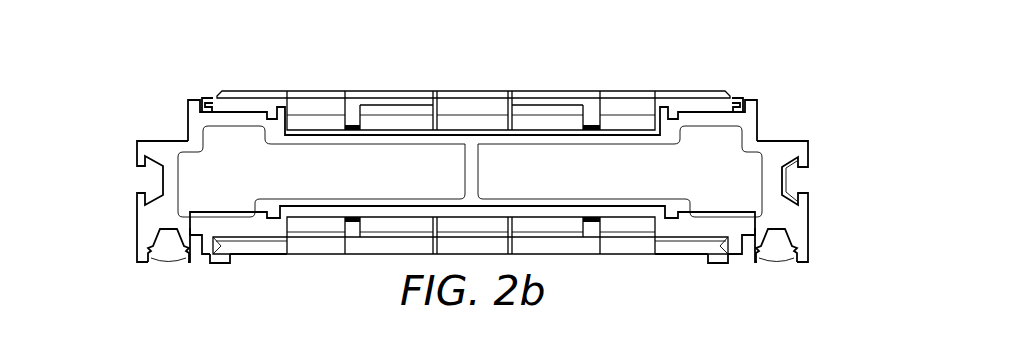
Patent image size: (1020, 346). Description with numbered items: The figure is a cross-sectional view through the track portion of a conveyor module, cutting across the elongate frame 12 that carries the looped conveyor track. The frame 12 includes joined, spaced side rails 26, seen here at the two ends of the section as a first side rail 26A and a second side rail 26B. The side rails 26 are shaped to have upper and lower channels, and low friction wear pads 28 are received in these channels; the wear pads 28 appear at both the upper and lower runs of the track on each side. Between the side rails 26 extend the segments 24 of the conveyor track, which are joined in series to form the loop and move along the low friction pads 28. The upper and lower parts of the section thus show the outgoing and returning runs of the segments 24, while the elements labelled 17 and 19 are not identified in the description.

The frame 12 is at (139, 260).
The top cover plate 17 is at (313, 90).
The bottom cover plate 19 is at (340, 244).
The segments 24 is at (626, 91).
The side rails 26 is at (152, 212).
The first side rail 26A is at (788, 148).
The second side rail 26B is at (150, 150).
The low friction wear pads 28 is at (208, 99).